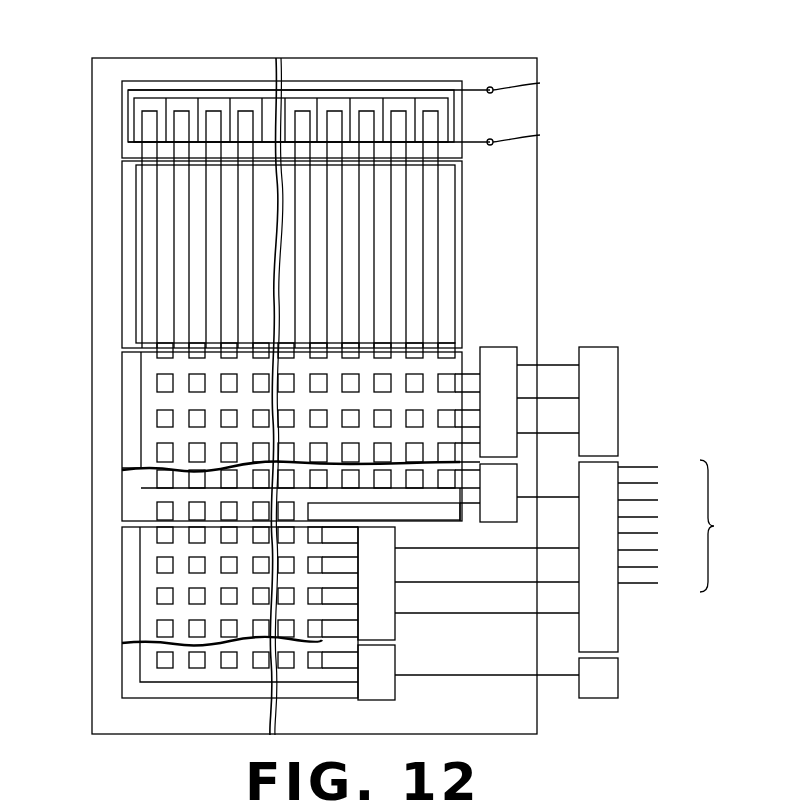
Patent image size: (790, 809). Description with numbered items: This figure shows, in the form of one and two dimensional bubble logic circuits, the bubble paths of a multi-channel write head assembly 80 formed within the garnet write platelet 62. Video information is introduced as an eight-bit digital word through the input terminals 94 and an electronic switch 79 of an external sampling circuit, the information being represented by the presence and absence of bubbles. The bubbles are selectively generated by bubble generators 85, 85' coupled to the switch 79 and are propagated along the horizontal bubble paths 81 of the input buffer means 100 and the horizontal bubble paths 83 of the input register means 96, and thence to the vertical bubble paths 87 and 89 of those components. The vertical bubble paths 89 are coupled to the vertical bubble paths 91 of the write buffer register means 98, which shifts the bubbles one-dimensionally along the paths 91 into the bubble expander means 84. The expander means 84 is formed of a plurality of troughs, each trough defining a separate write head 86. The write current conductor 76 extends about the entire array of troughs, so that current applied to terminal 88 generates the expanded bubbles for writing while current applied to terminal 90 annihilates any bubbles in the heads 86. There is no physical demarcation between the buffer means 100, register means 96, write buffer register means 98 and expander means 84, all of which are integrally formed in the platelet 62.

The write platelet 62 is at (91, 188).
The write current conductor 76 is at (332, 89).
The electronic switch 79 is at (597, 350).
The multi-channel write head assembly 80 is at (558, 212).
The horizontal bubble paths 81 is at (150, 655).
The horizontal bubble paths 83 is at (182, 433).
The bubble expander means 84 is at (122, 129).
The bubble generator 85 is at (529, 410).
The bubble generator 85' is at (468, 612).
The write head 86 is at (158, 88).
The vertical bubble paths 87 is at (213, 660).
The terminal 88 is at (530, 84).
The vertical bubble paths 89 is at (213, 454).
The terminal 90 is at (350, 138).
The vertical bubble paths 91 is at (196, 318).
The input terminals 94 is at (681, 523).
The input register means 96 is at (122, 430).
The write buffer register means 98 is at (122, 238).
The input buffer means 100 is at (122, 568).